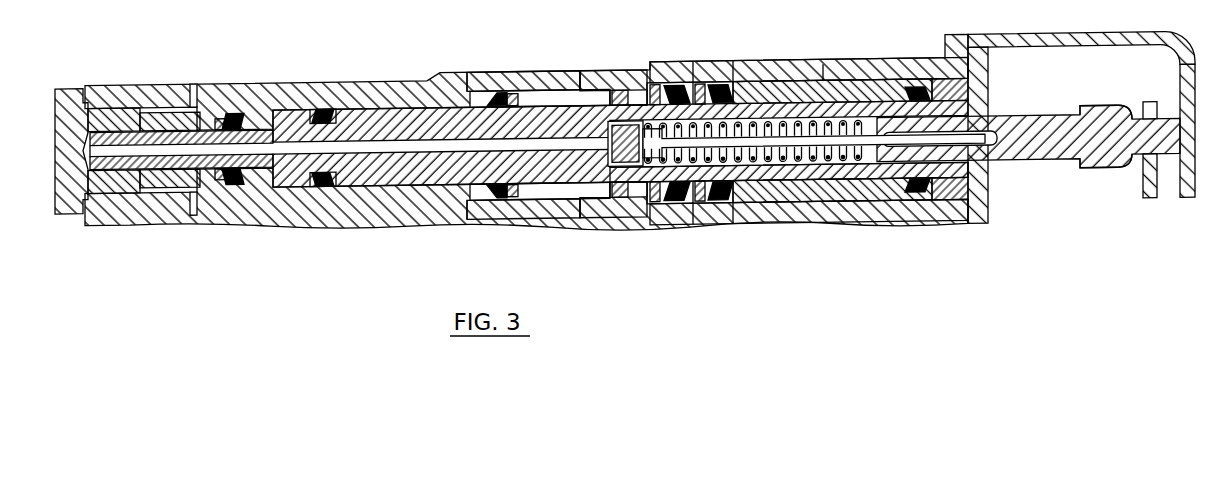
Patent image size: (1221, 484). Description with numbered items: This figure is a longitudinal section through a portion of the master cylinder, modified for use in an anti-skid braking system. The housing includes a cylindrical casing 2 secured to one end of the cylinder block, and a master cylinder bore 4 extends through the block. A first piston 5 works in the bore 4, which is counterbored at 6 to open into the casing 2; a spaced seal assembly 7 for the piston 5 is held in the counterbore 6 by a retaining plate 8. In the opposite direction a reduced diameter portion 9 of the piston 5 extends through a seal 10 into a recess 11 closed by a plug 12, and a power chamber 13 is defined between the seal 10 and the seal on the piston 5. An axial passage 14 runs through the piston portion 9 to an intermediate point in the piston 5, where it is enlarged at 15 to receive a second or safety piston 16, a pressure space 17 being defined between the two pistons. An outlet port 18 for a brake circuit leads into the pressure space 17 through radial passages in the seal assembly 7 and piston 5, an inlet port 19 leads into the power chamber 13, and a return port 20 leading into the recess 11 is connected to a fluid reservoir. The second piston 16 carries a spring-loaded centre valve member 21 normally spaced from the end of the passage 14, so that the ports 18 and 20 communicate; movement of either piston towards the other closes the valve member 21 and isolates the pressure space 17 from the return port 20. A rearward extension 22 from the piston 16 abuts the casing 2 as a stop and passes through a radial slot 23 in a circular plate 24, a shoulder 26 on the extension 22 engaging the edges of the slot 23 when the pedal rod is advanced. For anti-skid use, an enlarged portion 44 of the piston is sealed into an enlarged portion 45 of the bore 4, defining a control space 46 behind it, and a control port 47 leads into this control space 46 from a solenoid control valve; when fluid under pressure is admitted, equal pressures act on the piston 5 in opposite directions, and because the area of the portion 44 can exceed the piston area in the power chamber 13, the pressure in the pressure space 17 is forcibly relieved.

The cylindrical casing 2 is at (1030, 43).
The master cylinder bore 4 is at (338, 111).
The first piston 5 is at (360, 172).
The counterbore 6 is at (742, 86).
The spaced seal assembly 7 is at (898, 83).
The retaining plate 8 is at (978, 61).
The reduced diameter portion 9 is at (112, 169).
The seal 10 is at (238, 115).
The recess 11 is at (187, 170).
The plug 12 is at (65, 130).
The power chamber 13 is at (280, 182).
The axial passage 14 is at (141, 144).
The enlarged portion of axial passage 15 is at (688, 184).
The second or safety piston 16 is at (1022, 124).
The pressure space 17 is at (813, 165).
The outlet port 18 is at (823, 70).
The inlet port 19 is at (283, 98).
The return port 20 is at (193, 95).
The centre valve member 21 is at (630, 163).
The rearward extension 22 is at (1170, 153).
The radial slot 23 is at (1151, 113).
The circular plate 24 is at (1143, 187).
The shoulder 26 is at (1093, 116).
The enlarged portion of piston 44 is at (506, 98).
The enlarged portion of bore 45 is at (545, 92).
The control space 46 is at (633, 100).
The control port 47 is at (620, 83).